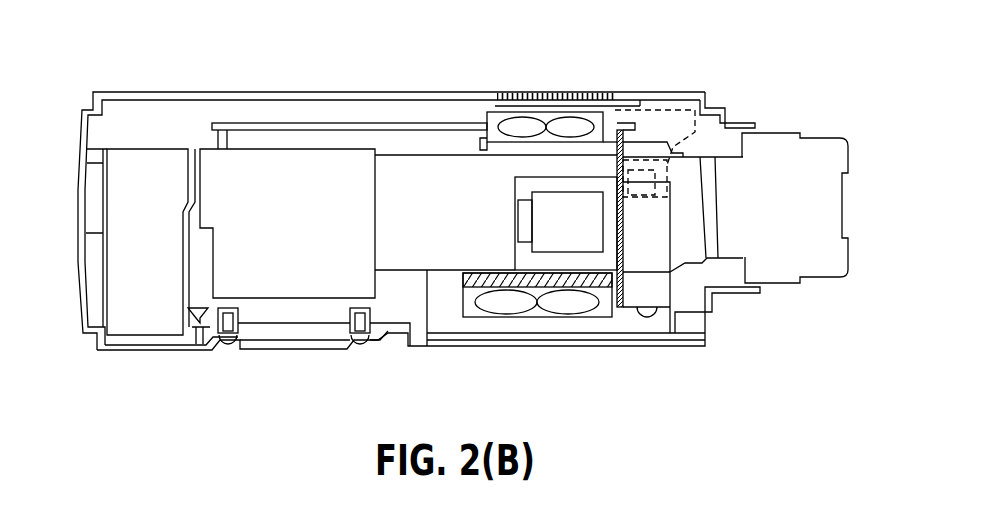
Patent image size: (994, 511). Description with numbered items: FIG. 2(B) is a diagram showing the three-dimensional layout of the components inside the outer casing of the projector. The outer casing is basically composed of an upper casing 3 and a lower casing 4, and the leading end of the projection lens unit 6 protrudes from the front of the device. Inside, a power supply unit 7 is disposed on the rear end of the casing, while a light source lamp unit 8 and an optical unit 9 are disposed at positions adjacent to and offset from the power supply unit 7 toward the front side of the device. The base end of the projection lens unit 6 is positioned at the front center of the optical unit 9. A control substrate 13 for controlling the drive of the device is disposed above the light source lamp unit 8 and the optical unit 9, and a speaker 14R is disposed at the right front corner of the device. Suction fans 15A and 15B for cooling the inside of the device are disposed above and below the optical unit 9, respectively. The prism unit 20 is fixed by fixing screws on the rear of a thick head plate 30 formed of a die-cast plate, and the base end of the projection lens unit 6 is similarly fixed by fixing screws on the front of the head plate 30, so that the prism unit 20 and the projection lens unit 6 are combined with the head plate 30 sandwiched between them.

The upper casing 3 is at (120, 92).
The lower casing 4 is at (147, 351).
The projection lens unit 6 is at (785, 130).
The power supply unit 7 is at (150, 275).
The light source lamp unit 8 is at (263, 177).
The optical unit 9 is at (420, 149).
The control substrate 13 is at (316, 116).
The speaker 14R is at (695, 110).
The suction fan 15A is at (517, 125).
The suction fan 15B is at (478, 305).
The prism unit 20 is at (567, 207).
The head plate 30 is at (637, 125).